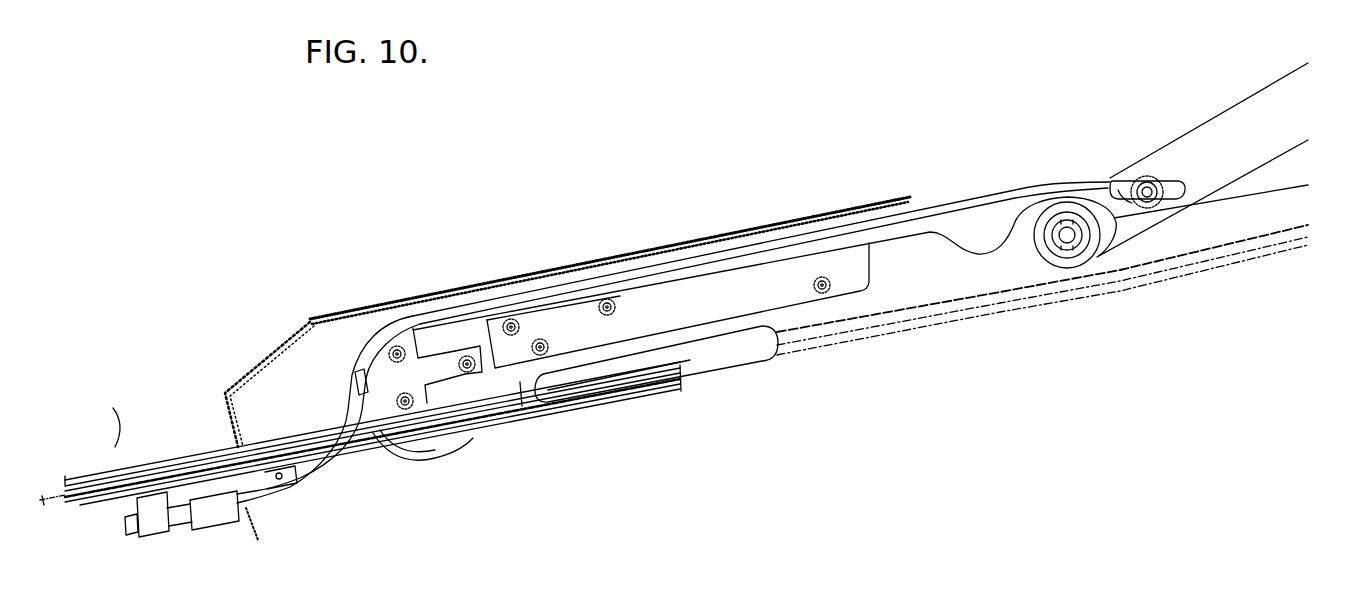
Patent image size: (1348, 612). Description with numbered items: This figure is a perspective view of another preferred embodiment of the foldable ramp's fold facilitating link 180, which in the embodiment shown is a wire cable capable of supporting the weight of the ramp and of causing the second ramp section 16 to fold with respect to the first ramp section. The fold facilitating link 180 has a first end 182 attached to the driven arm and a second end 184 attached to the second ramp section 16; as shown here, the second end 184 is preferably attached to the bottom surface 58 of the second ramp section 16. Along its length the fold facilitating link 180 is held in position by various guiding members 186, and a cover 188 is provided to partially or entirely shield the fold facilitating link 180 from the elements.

The second ramp section 16 is at (106, 412).
The bottom surface 58 is at (110, 507).
The fold facilitating link 180 is at (961, 200).
The first end 182 is at (1104, 180).
The second end 184 is at (178, 516).
The guiding members 186 is at (513, 360).
The cover 188 is at (333, 328).